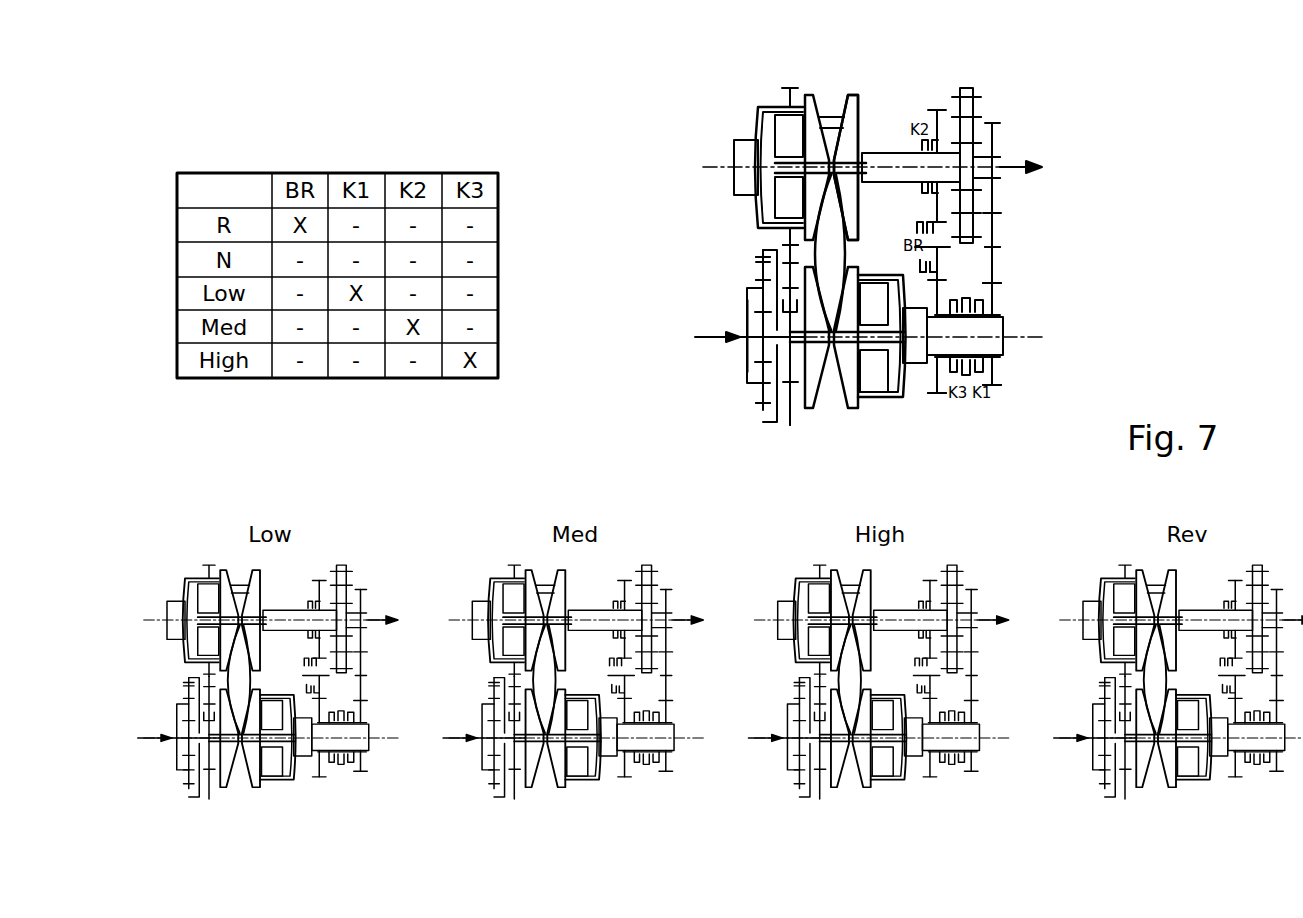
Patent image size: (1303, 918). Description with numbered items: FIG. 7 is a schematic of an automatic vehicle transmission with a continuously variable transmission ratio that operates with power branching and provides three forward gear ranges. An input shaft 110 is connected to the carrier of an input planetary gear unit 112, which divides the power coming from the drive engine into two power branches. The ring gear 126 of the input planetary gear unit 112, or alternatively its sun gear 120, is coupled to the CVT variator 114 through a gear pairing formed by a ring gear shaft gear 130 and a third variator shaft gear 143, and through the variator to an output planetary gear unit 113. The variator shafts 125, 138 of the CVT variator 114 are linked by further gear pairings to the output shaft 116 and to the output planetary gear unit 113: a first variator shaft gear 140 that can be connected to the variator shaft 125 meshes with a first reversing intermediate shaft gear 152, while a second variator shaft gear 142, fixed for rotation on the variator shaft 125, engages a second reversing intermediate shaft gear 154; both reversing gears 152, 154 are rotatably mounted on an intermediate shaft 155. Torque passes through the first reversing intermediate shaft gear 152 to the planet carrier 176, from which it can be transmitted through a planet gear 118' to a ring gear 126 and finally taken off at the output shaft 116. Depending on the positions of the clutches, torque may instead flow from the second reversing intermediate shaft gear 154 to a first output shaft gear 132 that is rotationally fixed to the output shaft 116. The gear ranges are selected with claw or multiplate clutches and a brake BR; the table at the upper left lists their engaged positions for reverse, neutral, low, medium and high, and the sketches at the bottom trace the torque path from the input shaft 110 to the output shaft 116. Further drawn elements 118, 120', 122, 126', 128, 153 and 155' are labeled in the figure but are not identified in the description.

The input shaft 110 is at (705, 337).
The input planetary gear unit 112 is at (722, 391).
The output planetary gear unit 113 is at (999, 82).
The CVT variator 114 is at (821, 86).
The output shaft 116 is at (1012, 158).
The gear 118 is at (705, 342).
The planet gear 118' is at (953, 84).
The sun gear 120 is at (714, 336).
The gear 120' is at (1014, 165).
The input shaft 122 is at (763, 328).
The variator shaft 125 is at (990, 327).
The ring gear 126 is at (723, 268).
The gear 126' is at (952, 134).
The gear 128 is at (763, 403).
The ring gear shaft gear 130 is at (790, 425).
The first output shaft gear 132 is at (995, 130).
The variator shaft 138 is at (878, 153).
The first variator shaft gear 140 is at (936, 378).
The second variator shaft gear 142 is at (990, 370).
The third variator shaft gear 143 is at (790, 87).
The first reversing intermediate shaft gear 152 is at (937, 265).
The clutch element 153 is at (775, 248).
The second reversing intermediate shaft gear 154 is at (992, 285).
The intermediate shaft 155 is at (1036, 247).
The gear 155' is at (721, 241).
The planet carrier 176 is at (932, 112).